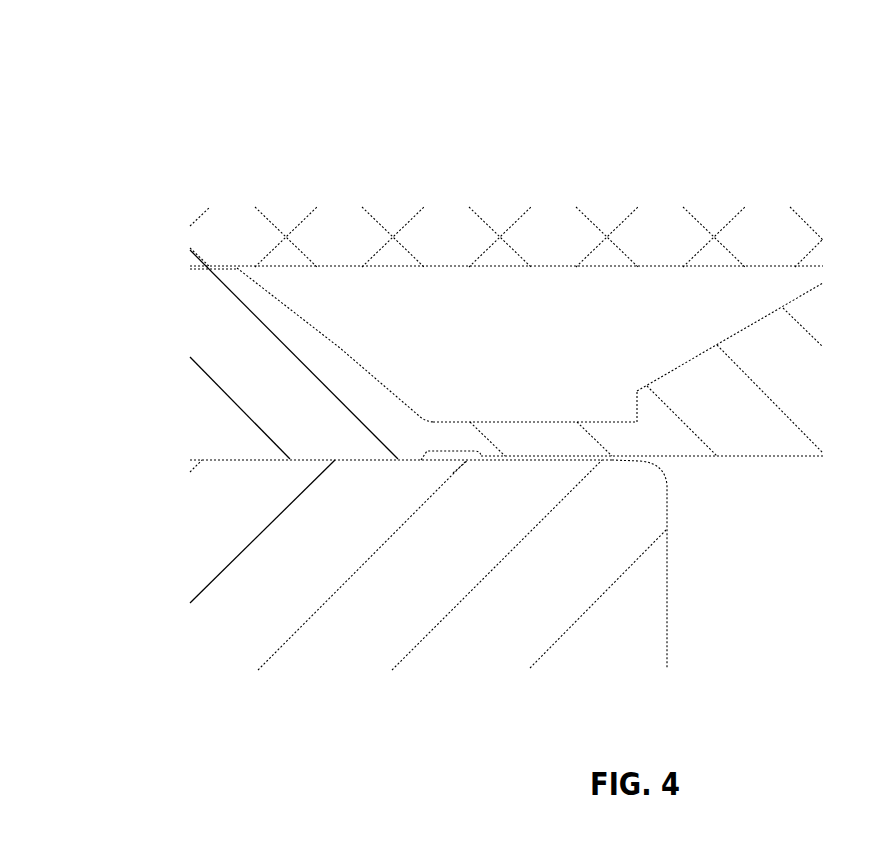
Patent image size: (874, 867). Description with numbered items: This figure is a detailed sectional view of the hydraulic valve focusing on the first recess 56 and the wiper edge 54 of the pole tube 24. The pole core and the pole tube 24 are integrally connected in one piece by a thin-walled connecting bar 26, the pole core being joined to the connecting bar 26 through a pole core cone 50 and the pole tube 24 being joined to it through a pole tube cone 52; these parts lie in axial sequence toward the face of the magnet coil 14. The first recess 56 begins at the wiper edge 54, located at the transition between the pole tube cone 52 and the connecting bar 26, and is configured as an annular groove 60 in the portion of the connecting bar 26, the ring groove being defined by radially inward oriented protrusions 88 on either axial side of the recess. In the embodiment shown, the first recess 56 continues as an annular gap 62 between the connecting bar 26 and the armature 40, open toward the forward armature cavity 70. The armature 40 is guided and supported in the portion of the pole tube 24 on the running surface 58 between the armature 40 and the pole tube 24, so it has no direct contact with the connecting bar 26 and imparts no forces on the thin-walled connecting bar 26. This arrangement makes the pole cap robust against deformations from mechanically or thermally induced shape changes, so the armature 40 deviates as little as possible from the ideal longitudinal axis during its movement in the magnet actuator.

The magnet coil 14 is at (533, 232).
The pole tube 24 is at (200, 328).
The connecting bar 26 is at (547, 437).
The armature 40 is at (243, 548).
The pole core cone 50 is at (703, 352).
The pole tube cone 52 is at (330, 355).
The wiper edge 54 is at (428, 450).
The first recess 56 is at (477, 295).
The running surface 58 is at (290, 459).
The annular groove 60 is at (447, 450).
The annular gap 62 is at (580, 455).
The forward armature cavity 70 is at (795, 535).
The radially inward oriented protrusions 88 is at (355, 459).